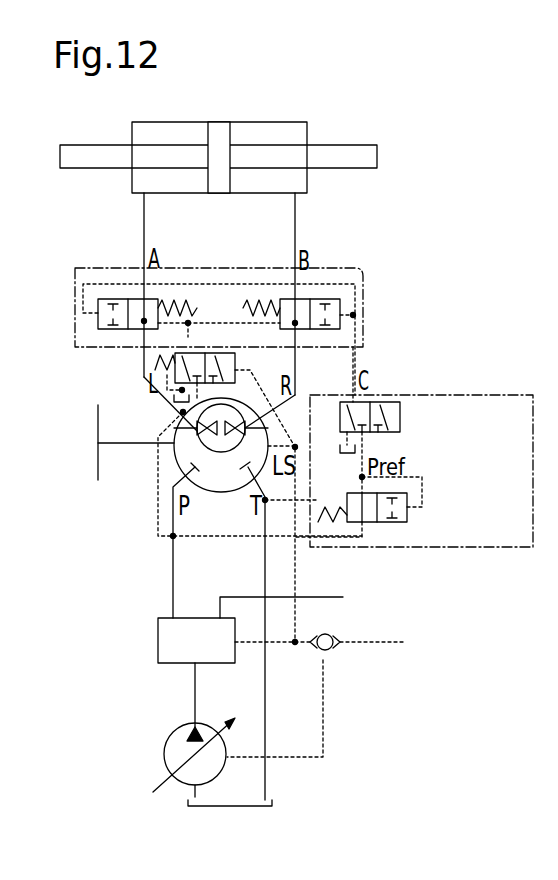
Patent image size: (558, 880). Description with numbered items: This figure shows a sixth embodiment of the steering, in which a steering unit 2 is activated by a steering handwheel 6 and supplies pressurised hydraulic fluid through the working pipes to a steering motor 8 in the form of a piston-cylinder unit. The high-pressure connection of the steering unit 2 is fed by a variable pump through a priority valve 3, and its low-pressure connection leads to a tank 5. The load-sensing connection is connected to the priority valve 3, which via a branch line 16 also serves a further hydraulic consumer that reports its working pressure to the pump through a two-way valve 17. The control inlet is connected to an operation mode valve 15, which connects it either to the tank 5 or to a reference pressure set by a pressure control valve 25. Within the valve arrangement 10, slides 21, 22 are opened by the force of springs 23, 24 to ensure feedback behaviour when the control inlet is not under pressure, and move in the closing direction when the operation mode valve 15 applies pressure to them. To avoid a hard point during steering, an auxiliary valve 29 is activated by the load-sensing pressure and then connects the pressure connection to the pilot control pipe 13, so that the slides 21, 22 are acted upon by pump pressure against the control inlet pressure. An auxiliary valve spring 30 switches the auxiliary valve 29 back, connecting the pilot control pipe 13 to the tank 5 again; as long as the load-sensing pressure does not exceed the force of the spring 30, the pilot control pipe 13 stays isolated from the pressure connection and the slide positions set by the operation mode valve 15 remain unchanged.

The steering unit 2 is at (178, 465).
The priority valve 3 is at (167, 633).
The tank 5 is at (180, 412).
The steering handwheel 6 is at (98, 428).
The steering motor 8 is at (275, 131).
The valve block 10 is at (363, 278).
The pilot control pipe 13 is at (188, 337).
The operation mode valve 15 is at (412, 418).
The branch line 16 is at (343, 597).
The two-way valve 17 is at (333, 649).
The slide 21 is at (137, 308).
The slide 22 is at (285, 303).
The spring 23 is at (172, 300).
The spring 24 is at (245, 306).
The pressure control valve 25 is at (411, 523).
The auxiliary valve 29 is at (245, 358).
The auxiliary valve spring 30 is at (155, 363).